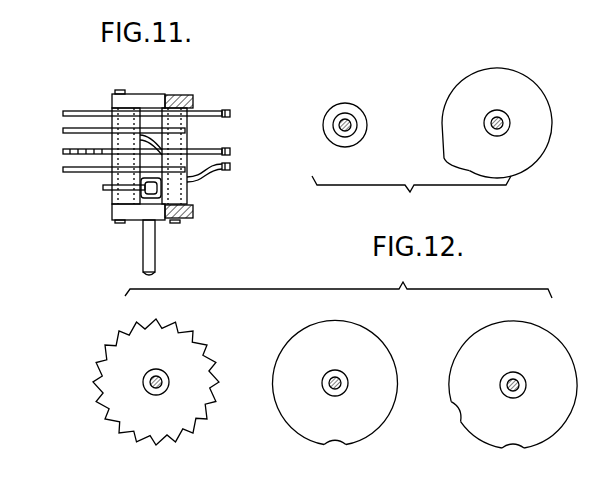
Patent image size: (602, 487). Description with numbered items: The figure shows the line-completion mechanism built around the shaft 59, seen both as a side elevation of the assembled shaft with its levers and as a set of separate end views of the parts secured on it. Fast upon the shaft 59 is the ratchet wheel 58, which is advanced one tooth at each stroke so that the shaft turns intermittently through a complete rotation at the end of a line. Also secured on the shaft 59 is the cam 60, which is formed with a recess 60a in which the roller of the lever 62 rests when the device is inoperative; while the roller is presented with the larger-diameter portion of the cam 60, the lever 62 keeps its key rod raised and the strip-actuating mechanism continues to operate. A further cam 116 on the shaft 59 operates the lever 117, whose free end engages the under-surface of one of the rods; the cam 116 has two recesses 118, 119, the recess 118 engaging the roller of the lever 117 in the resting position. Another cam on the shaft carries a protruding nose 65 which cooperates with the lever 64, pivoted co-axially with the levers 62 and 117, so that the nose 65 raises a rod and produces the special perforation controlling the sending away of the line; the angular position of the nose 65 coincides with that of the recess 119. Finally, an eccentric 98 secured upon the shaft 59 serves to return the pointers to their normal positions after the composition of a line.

In FIG. 11, the ratchet wheel 58 is at (63, 152).
In FIG. 12, the ratchet wheel 58 is at (178, 436).
In FIG. 11, the shaft 59 is at (126, 94).
In FIG. 12, the shaft 59 is at (163, 377).
In FIG. 11, the cam 60 is at (63, 131).
In FIG. 12, the cam 60 is at (371, 343).
In FIG. 12, the recess 60a is at (333, 446).
In FIG. 11, the lever 62 is at (229, 150).
In FIG. 11, the lever 64 is at (229, 171).
In FIG. 11, the protruding nose 65 is at (444, 159).
In FIG. 11, the eccentric 98 is at (103, 188).
In FIG. 11, the cam 116 is at (78, 111).
In FIG. 12, the cam 116 is at (538, 338).
In FIG. 11, the lever 117 is at (213, 113).
In FIG. 12, the recess 118 is at (512, 450).
In FIG. 12, the recess 119 is at (463, 419).